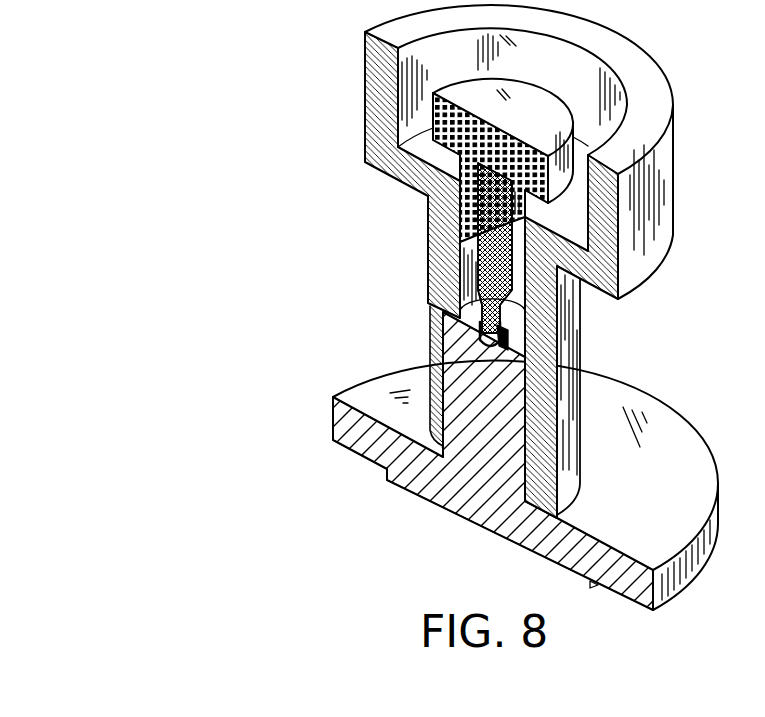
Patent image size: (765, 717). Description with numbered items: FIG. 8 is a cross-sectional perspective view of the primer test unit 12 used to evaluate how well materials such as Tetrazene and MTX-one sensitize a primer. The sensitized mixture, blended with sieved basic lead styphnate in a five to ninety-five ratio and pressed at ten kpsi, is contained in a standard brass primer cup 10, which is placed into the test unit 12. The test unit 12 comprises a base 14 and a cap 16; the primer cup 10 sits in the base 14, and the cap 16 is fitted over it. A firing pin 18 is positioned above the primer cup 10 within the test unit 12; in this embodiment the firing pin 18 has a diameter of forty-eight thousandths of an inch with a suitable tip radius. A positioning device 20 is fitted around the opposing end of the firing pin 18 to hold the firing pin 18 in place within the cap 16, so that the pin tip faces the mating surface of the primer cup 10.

The primer cup 10 is at (505, 342).
The test unit 12 is at (158, 53).
The base 14 is at (360, 440).
The cap 16 is at (403, 170).
The firing pin 18 is at (505, 343).
The positioning device 20 is at (478, 125).